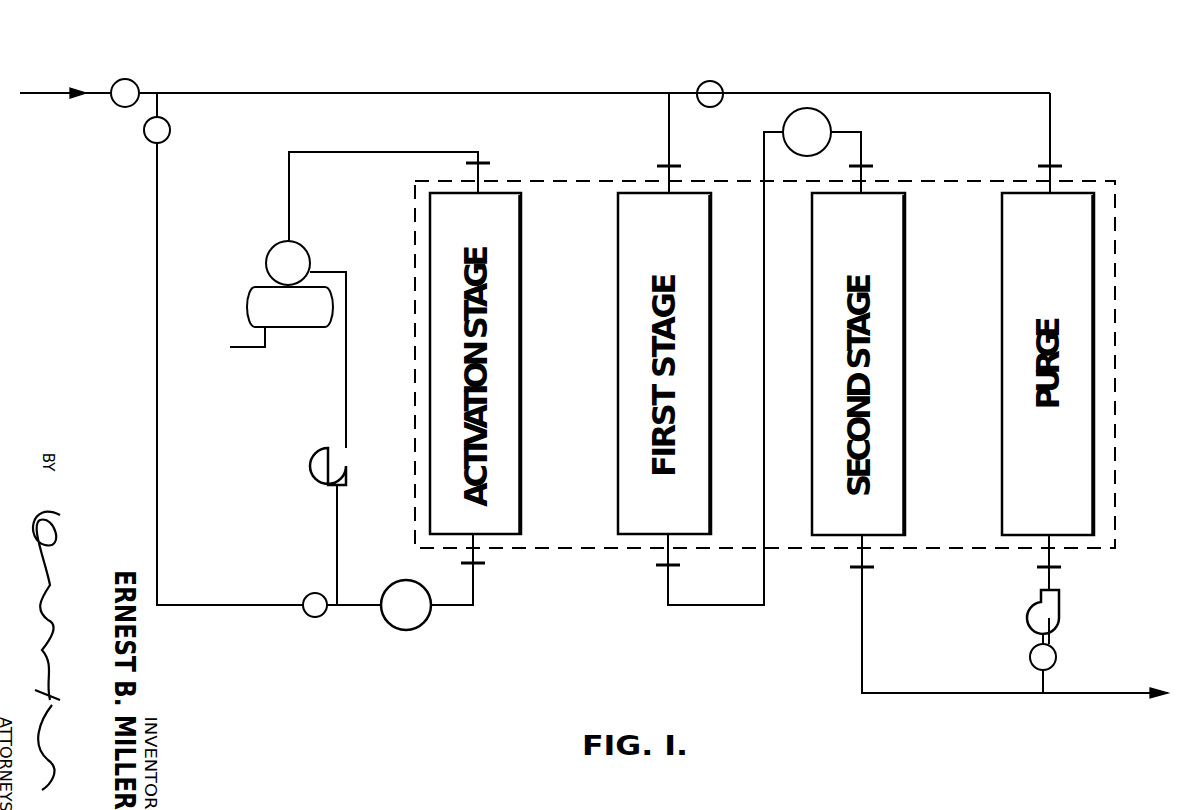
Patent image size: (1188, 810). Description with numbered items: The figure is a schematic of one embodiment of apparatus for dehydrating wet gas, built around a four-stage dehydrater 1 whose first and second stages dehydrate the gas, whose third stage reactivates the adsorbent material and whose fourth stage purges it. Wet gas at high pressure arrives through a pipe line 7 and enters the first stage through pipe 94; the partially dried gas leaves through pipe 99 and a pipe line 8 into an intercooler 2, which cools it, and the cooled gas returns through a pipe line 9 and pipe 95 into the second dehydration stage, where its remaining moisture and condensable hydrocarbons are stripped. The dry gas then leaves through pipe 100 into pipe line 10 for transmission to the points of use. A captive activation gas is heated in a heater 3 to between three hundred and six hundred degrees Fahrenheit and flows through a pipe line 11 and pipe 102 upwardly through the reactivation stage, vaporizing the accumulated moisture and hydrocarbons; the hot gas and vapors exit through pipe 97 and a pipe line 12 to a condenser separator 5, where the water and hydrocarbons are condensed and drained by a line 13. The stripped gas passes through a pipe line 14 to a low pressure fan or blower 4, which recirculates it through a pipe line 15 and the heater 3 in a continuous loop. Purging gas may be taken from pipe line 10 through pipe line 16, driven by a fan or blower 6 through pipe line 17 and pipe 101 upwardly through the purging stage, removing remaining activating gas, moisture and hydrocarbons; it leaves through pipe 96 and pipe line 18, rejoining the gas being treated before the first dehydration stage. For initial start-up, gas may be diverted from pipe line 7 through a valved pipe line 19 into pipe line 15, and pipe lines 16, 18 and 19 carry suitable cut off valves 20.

The four-stage dehydrater 1 is at (1128, 346).
The intercooler 2 is at (831, 125).
The heater 3 is at (398, 622).
The low pressure fan or blower 4 is at (352, 462).
The condenser separator 5 is at (266, 262).
The fan or blower 6 is at (1059, 606).
The pipe line 7 is at (418, 93).
The pipe line 8 is at (764, 470).
The pipe line 9 is at (848, 138).
The pipe line 10 is at (968, 693).
The pipe line 11 is at (452, 607).
The pipe line 12 is at (392, 152).
The line 13 is at (240, 352).
The pipe line 14 is at (346, 372).
The pipe line 15 is at (337, 535).
The pipe line 16 is at (1048, 640).
The pipe line 17 is at (1052, 580).
The pipe line 18 is at (960, 93).
The valved pipe line 19 is at (157, 466).
The cut off valves 20 is at (170, 128).
The pipe 94 is at (672, 176).
The pipe 95 is at (862, 176).
The pipe 96 is at (1052, 176).
The pipe 97 is at (478, 172).
The pipe 99 is at (670, 562).
The pipe 100 is at (866, 560).
The pipe 101 is at (1052, 558).
The pipe 102 is at (476, 562).